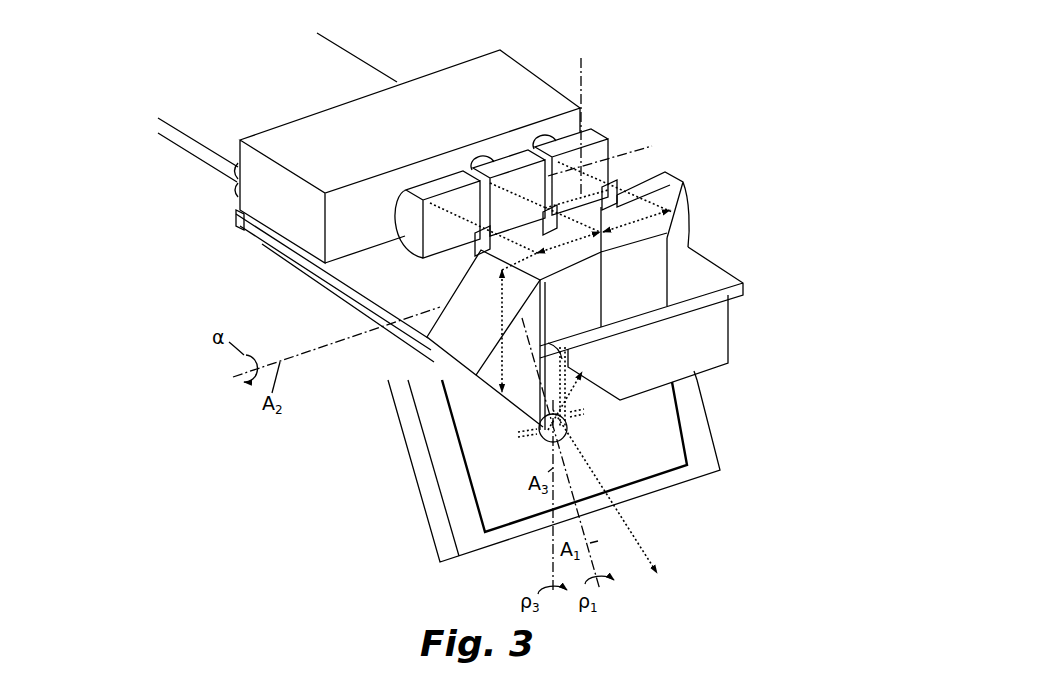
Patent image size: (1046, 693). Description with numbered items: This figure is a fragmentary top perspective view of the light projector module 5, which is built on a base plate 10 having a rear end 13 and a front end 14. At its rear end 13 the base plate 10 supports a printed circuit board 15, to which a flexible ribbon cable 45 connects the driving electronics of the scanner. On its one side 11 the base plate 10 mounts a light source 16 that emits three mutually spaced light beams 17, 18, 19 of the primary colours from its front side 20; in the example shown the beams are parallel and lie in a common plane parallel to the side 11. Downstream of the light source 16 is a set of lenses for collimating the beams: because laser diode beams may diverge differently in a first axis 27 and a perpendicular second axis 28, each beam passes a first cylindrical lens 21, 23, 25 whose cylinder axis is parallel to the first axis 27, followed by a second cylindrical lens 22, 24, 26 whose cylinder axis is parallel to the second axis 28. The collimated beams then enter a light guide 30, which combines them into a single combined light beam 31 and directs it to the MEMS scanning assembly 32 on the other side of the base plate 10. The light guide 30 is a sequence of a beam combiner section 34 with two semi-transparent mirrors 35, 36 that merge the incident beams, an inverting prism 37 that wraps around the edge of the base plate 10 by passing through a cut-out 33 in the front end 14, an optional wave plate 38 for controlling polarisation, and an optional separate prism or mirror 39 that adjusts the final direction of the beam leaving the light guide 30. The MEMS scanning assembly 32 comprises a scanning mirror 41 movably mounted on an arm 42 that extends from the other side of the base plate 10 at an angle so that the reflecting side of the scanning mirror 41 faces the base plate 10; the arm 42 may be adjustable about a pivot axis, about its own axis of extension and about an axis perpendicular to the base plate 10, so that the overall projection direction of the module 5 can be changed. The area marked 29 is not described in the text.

The light projector module 5 is at (213, 443).
The base plate 10 is at (718, 274).
The one side 11 is at (363, 275).
The rear end 13 is at (413, 60).
The front end 14 is at (762, 297).
The printed circuit board 15 is at (188, 123).
The light source 16 is at (287, 220).
The light beam 17 is at (458, 219).
The light beam 18 is at (521, 197).
The light beam 19 is at (586, 183).
The front side 20 is at (368, 208).
The first cylindrical lens 21 is at (567, 140).
The second cylindrical lens 22 is at (663, 172).
The first cylindrical lens 23 is at (507, 163).
The second cylindrical lens 24 is at (543, 208).
The first cylindrical lens 25 is at (443, 184).
The second cylindrical lens 26 is at (476, 252).
The first axis 27 is at (639, 146).
The second axis 28 is at (584, 76).
The working area 29 is at (412, 298).
The light guide 30 is at (707, 218).
The combined light beam 31 is at (500, 320).
The MEMS scanning assembly 32 is at (752, 462).
The cut-out 33 is at (467, 347).
The beam combiner section 34 is at (633, 298).
The semi-transparent mirror 35 is at (568, 240).
The semi-transparent mirror 36 is at (636, 217).
The inverting prism 37 is at (393, 393).
The wave plate 38 is at (547, 345).
The separate prism or mirror 39 is at (715, 329).
The scanning mirror 41 is at (537, 439).
The arm 42 is at (417, 443).
The ribbon cable 45 is at (236, 185).